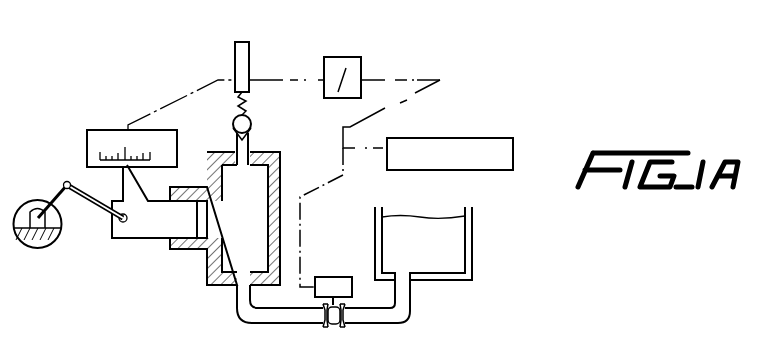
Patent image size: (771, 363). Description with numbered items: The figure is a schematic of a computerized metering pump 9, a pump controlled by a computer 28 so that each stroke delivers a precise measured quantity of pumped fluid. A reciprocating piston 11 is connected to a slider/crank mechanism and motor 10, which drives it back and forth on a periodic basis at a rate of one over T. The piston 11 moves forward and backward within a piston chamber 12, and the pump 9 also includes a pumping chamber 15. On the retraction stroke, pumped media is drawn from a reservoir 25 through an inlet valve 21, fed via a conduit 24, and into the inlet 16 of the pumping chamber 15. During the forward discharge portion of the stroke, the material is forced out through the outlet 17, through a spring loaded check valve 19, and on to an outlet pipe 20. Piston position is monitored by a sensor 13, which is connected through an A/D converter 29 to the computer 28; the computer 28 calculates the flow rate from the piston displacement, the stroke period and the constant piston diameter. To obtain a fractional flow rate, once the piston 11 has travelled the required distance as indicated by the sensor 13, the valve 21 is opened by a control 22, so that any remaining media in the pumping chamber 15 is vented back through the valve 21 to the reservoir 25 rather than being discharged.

The metering pump 9 is at (203, 315).
The slider/crank mechanism and motor 10 is at (38, 248).
The piston 11 is at (163, 228).
The piston chamber 12 is at (202, 253).
The sensor 13 is at (178, 148).
The pumping chamber 15 is at (253, 227).
The inlet 16 is at (245, 268).
The outlet 17 is at (239, 177).
The spring loaded check valve 19 is at (253, 127).
The outlet pipe 20 is at (240, 60).
The inlet valve 21 is at (332, 327).
The control 22 is at (350, 277).
The conduit 24 is at (407, 322).
The reservoir 25 is at (432, 255).
The computer 28 is at (465, 138).
The A/D converter 29 is at (348, 57).